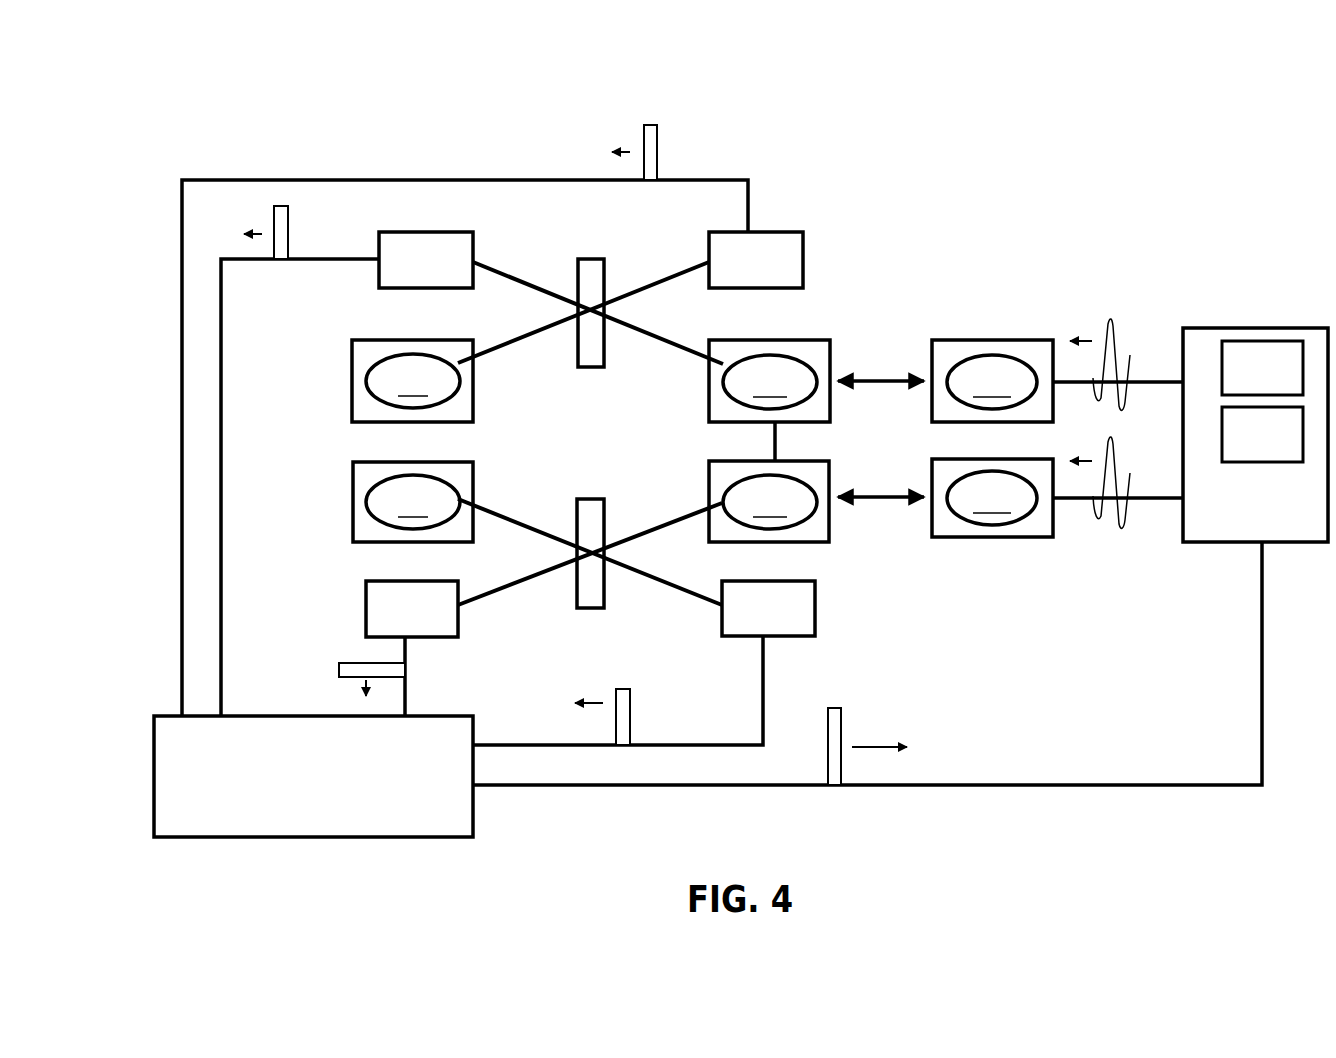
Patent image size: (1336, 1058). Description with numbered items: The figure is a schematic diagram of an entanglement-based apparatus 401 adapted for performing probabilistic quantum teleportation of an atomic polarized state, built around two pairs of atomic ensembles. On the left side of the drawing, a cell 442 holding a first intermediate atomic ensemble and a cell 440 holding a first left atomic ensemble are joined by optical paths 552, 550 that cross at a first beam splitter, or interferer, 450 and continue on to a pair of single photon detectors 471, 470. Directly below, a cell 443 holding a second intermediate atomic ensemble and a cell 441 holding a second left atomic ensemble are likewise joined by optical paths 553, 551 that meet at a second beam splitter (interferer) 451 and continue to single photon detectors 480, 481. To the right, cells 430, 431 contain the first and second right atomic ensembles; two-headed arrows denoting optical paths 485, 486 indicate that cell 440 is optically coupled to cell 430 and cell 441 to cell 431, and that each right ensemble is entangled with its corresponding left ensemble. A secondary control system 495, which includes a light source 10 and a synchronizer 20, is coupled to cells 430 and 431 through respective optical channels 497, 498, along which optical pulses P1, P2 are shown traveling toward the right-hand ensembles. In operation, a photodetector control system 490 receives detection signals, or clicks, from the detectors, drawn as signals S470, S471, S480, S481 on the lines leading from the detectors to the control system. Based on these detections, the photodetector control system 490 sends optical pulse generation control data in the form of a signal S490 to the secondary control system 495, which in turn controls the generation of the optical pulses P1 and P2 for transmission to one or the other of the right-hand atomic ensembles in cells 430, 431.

The entanglement-based apparatus 401 is at (1145, 152).
The single photon detector (SPD) 470 is at (731, 280).
The single photon detector (SPD) 471 is at (401, 280).
The cell 442 is at (390, 344).
The cell 443 is at (380, 465).
The cell 440 is at (790, 340).
The cell 441 is at (735, 461).
The cell 430 is at (1013, 340).
The cell 431 is at (968, 537).
The first beam splitter (interferer) 450 is at (590, 259).
The second beam splitter (interferer) 451 is at (591, 610).
The optical path 550 is at (643, 325).
The optical path 551 is at (655, 525).
The optical path 552 is at (541, 333).
The optical path 553 is at (525, 525).
The optical path 485 is at (875, 385).
The optical path 486 is at (875, 501).
The single photon detector (SPD) 480 is at (387, 629).
The single photon detector (SPD) 481 is at (743, 628).
The photodetector control system 490 is at (288, 795).
The secondary control system 495 is at (1255, 435).
The light source 10 is at (1245, 387).
The synchronizer 20 is at (1245, 452).
The optical channel 497 is at (1157, 380).
The optical channel 498 is at (1153, 505).
The optical pulse P1 is at (1110, 322).
The optical pulse P2 is at (1097, 495).
The control signal to light source 470 S470 is at (658, 152).
The control signal to light source 471 S471 is at (290, 218).
The control signal to light source 480 S480 is at (340, 668).
The control signal to light source 481 S481 is at (632, 700).
The signal S490 is at (843, 731).